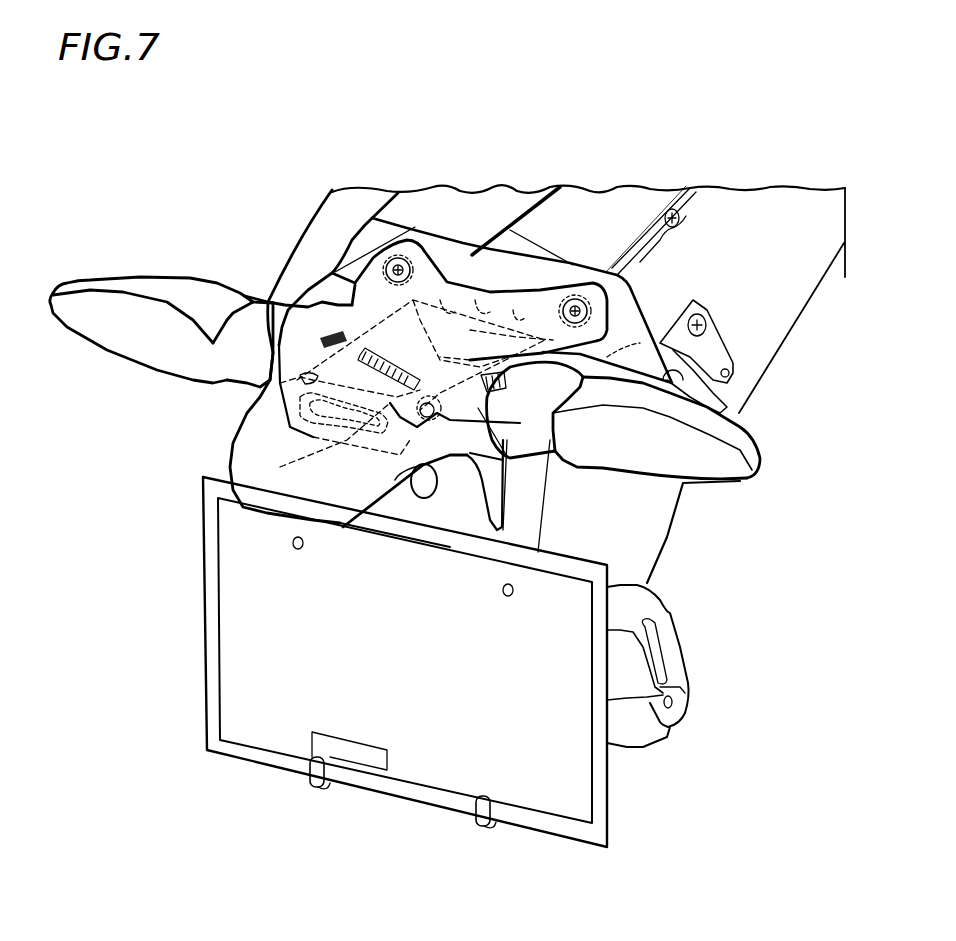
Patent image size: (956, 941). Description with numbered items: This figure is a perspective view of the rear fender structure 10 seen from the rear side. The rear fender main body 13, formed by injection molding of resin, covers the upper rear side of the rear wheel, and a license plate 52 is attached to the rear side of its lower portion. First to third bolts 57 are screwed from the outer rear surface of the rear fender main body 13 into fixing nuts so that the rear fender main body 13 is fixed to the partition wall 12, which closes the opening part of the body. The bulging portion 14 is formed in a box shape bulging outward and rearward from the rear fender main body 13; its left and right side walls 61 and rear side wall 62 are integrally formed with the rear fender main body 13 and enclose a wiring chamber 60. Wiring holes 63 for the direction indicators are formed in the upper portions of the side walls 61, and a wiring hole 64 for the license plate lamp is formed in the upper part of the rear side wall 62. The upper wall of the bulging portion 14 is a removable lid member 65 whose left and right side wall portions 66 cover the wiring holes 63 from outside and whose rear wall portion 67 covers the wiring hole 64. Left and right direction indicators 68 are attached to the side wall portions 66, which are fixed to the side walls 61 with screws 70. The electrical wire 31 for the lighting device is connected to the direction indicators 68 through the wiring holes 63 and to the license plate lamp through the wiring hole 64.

The rear fender structure 10 is at (704, 539).
The partition wall 12 is at (480, 300).
The rear fender main body 13 is at (640, 557).
The bulging portion 14 is at (487, 490).
The electrical wire for the lighting device 31 is at (318, 340).
The license plate 52 is at (423, 767).
The bolt 57 is at (390, 258).
The wiring chamber 60 is at (445, 302).
The side wall 61 is at (375, 327).
The rear side wall 62 is at (313, 437).
The wiring hole for direction indicator 63 is at (342, 337).
The wiring hole for license plate lamp 64 is at (313, 490).
The lid member 65 is at (253, 423).
The side wall portion 66 is at (373, 470).
The rear wall portion 67 is at (390, 405).
The direction indicator 68 is at (103, 280).
The screw 70 is at (547, 460).